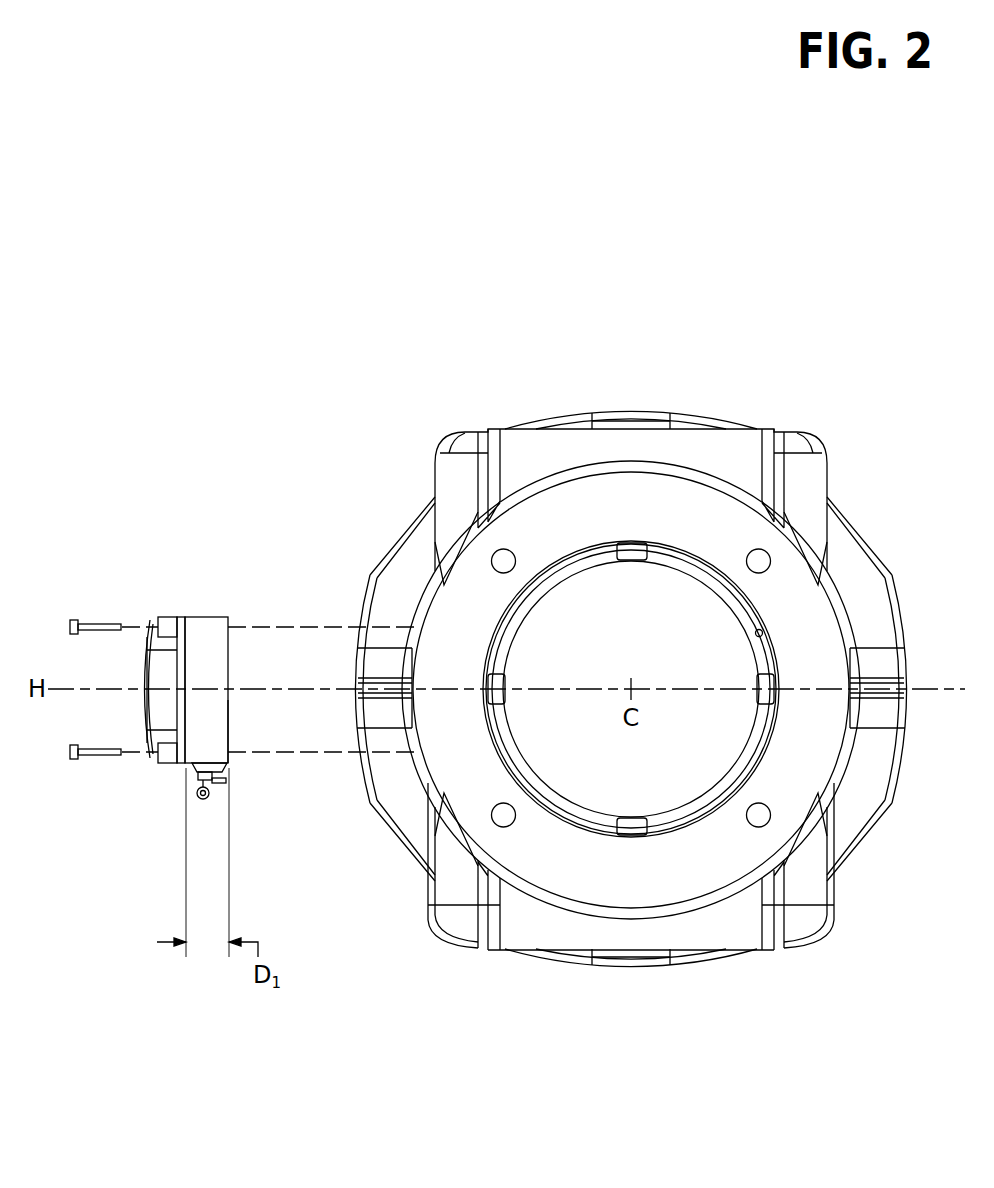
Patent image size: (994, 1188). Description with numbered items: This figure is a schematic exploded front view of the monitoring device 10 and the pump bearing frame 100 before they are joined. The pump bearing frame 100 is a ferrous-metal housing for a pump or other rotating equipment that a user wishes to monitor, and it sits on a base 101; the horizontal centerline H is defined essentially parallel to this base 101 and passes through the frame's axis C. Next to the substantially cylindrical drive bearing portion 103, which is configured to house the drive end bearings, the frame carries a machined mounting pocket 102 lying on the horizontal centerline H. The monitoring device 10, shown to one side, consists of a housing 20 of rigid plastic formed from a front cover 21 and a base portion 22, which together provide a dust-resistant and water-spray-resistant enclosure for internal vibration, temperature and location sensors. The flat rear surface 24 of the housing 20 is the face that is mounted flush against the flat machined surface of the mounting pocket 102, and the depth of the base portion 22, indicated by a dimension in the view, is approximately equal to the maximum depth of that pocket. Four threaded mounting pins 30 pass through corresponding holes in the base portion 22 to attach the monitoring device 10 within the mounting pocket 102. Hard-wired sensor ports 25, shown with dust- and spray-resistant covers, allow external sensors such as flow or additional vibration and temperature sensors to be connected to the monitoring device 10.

The monitoring device 10 is at (209, 541).
The housing 20 is at (193, 617).
The front cover 21 is at (163, 617).
The base portion 22 is at (217, 617).
The rear surface 24 is at (228, 744).
The hard-wired sensor ports 25 is at (195, 772).
The threaded mounting pins 30 is at (85, 620).
The pump bearing frame 100 is at (515, 402).
The base 101 is at (748, 949).
The mounting pocket 102 is at (414, 785).
The drive bearing portion 103 is at (764, 635).